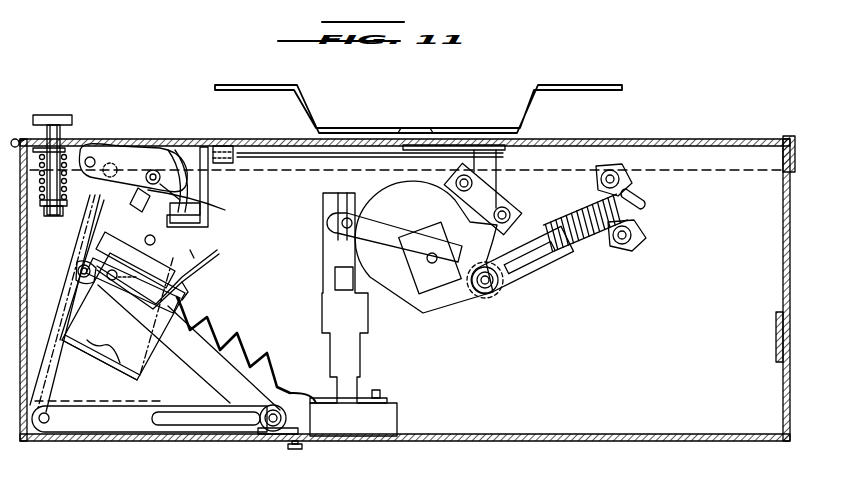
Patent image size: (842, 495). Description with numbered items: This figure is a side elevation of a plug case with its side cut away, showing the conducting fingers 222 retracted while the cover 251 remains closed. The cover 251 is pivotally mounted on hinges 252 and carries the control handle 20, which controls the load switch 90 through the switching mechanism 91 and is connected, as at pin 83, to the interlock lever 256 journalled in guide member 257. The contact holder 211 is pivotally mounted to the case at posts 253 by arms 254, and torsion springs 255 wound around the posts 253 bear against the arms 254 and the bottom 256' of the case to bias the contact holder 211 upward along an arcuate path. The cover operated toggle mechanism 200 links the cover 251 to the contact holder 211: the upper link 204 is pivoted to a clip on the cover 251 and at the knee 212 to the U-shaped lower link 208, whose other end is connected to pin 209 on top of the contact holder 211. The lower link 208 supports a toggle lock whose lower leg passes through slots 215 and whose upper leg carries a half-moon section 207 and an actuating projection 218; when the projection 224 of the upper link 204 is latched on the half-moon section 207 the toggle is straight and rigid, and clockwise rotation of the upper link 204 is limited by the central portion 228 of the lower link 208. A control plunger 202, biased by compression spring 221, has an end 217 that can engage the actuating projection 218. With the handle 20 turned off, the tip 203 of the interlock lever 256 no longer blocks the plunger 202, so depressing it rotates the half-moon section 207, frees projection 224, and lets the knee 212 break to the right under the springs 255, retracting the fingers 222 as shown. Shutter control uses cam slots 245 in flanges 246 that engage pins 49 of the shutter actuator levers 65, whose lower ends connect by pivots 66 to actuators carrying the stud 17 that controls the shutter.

The removable stud 17 is at (296, 450).
The control handle 20 is at (335, 113).
The pins 49 is at (77, 270).
The shutter actuator levers 65 is at (77, 243).
The pivots 66 is at (44, 424).
The pin 83 is at (478, 162).
The load switch 90 is at (362, 353).
The switching mechanism 91 is at (530, 289).
The toggle mechanism 200 is at (133, 136).
The control plunger 202 is at (60, 116).
The tip of interlock lever 203 is at (187, 187).
The upper link 204 is at (152, 150).
The half-moon section 207 is at (146, 170).
The lower link 208 is at (160, 240).
The pin 209 is at (119, 276).
The contact holder 211 is at (118, 334).
The knee 212 is at (188, 177).
The slots 215 is at (146, 208).
The end of control plunger 217 is at (53, 216).
The actuating projection 218 is at (70, 303).
The compression spring 221 is at (64, 177).
The conducting fingers 222 is at (46, 125).
The projection of upper link 224 is at (194, 203).
The central portion of lower link 228 is at (165, 178).
The cam slot 245 is at (193, 256).
The flanges 246 is at (190, 284).
The cover 251 is at (284, 151).
The hinges 252 is at (17, 137).
The posts 253 is at (264, 434).
The arms 254 is at (210, 366).
The torsion springs 255 is at (265, 407).
The interlock lever 256 is at (405, 166).
The bottom of the case 256' is at (405, 454).
The guide member 257 is at (223, 164).